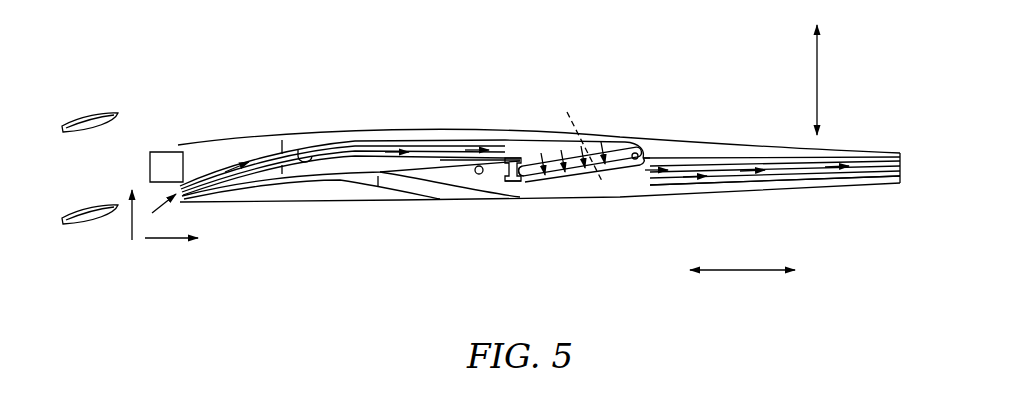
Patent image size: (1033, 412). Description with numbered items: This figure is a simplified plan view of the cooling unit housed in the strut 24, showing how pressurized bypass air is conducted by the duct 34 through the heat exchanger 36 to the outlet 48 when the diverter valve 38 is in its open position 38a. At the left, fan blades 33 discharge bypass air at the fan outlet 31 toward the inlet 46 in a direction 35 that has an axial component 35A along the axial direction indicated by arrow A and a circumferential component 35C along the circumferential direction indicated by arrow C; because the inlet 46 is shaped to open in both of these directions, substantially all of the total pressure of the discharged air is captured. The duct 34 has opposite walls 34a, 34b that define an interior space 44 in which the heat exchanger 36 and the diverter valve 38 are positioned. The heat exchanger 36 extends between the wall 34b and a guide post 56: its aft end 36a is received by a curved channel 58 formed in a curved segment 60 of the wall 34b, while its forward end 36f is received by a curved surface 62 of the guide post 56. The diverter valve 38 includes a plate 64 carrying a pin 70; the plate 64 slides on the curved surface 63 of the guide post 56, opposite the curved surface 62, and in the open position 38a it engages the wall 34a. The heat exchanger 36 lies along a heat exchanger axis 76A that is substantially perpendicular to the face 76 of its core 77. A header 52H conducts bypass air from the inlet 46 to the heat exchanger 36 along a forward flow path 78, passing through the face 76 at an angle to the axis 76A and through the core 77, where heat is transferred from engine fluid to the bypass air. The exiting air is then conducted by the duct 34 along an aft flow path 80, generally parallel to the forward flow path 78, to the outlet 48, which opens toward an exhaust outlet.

The fan blades 33 is at (82, 117).
The outlet 31 is at (130, 157).
The direction 35 is at (157, 203).
The circumferential component 35C is at (132, 232).
The axial component 35A is at (167, 240).
The inlet 46 is at (184, 200).
The strut 24 is at (717, 139).
The header 52H is at (369, 147).
The forward flow path 78 is at (312, 156).
The interior space 44 is at (357, 164).
The diverter valve 38 is at (418, 178).
The open position 38a is at (450, 181).
The plate 64 is at (448, 164).
The pin 70 is at (480, 164).
The guide post 56 is at (510, 152).
The curved surface 62 is at (520, 157).
The curved surface 63 is at (494, 181).
The wall 34b is at (532, 137).
The wall 34a is at (530, 200).
The heat exchanger 36 is at (615, 149).
The aft end 36a is at (634, 153).
The forward end 36f is at (524, 174).
The heat exchanger axis 76A is at (585, 150).
The face 76 is at (555, 177).
The core 77 is at (533, 177).
The curved segment 60 is at (652, 152).
The curved channel 58 is at (655, 173).
The duct 34 is at (767, 159).
The aft flow path 80 is at (757, 172).
The outlet 48 is at (888, 161).
The circumferential direction C is at (817, 70).
The axial direction A is at (740, 273).